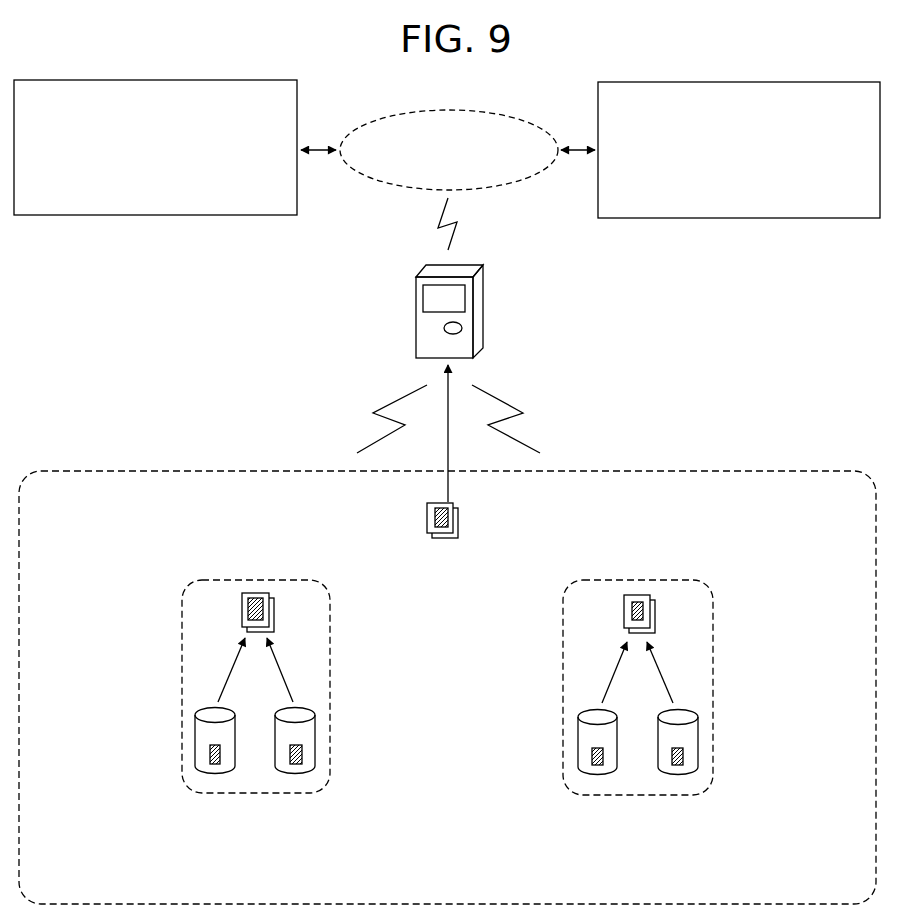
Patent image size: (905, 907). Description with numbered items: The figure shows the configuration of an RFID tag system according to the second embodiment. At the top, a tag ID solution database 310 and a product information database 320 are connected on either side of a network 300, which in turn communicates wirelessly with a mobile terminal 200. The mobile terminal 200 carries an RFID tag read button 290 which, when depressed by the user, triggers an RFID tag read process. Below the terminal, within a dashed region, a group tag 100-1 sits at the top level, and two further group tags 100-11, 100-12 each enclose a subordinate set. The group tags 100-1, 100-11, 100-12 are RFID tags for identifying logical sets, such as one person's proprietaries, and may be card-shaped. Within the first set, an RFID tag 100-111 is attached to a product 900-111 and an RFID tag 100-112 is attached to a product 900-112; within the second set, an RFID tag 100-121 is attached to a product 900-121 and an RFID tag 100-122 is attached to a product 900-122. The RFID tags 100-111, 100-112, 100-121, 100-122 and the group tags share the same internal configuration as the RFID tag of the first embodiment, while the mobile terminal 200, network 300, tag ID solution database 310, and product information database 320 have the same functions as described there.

The tag ID solution database 310 is at (159, 80).
The product information database 320 is at (758, 60).
The network 300 is at (497, 111).
The mobile terminal 200 is at (416, 328).
The RFID tag read button 290 is at (458, 329).
The group tag 100-1 is at (440, 534).
The group tag 100-11 is at (262, 580).
The group tag 100-12 is at (638, 580).
The RFID tag 100-111 is at (209, 755).
The RFID tag 100-112 is at (303, 746).
The RFID tag 100-121 is at (591, 754).
The RFID tag 100-122 is at (684, 755).
The product 900-111 is at (210, 771).
The product 900-112 is at (298, 771).
The product 900-121 is at (593, 771).
The product 900-122 is at (680, 771).